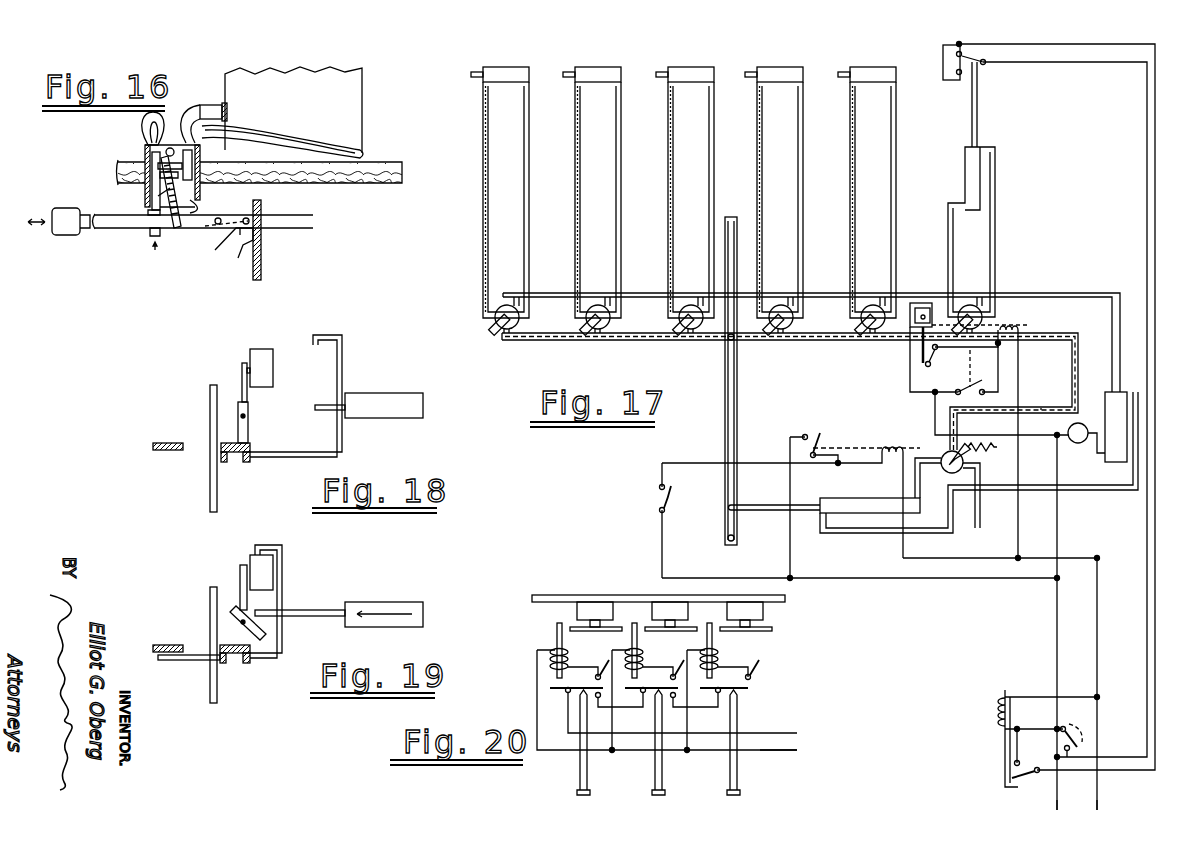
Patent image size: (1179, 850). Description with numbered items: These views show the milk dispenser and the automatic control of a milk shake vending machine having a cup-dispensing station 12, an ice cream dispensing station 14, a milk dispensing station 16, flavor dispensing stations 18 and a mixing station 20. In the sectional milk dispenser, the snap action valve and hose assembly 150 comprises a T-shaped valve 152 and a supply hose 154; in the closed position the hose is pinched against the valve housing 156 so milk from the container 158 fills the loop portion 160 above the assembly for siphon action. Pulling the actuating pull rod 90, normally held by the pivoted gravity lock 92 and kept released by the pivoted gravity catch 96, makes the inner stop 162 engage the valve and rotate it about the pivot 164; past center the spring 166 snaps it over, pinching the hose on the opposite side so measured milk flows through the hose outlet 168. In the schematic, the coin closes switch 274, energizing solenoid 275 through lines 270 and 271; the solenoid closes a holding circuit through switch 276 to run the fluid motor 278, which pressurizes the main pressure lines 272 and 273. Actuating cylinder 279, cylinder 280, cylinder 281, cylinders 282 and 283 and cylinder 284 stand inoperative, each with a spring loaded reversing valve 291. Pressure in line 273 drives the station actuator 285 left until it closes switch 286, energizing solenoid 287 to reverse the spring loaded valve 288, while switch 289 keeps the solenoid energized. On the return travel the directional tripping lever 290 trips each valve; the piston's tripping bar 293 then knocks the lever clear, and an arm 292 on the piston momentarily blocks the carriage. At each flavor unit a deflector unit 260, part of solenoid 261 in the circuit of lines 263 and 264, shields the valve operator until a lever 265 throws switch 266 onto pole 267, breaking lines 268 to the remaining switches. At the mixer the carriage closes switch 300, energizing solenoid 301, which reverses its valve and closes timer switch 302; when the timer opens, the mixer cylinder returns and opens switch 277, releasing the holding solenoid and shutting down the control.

In FIG. 17, the cup-dispensing station 12 is at (492, 175).
In FIG. 17, the ice cream dispensing station 14 is at (584, 175).
In FIG. 17, the milk dispensing station 16 is at (679, 175).
In FIG. 17, the flavor dispensing stations 18 is at (820, 173).
In FIG. 17, the mixing station 20 is at (1014, 114).
In FIG. 16, the actuating pull rod 90 is at (100, 229).
In FIG. 16, the pivoted gravity lock 92 is at (262, 262).
In FIG. 16, the pivoted gravity catch 96 is at (232, 258).
In FIG. 16, the snap action valve and hose assembly 150 is at (141, 155).
In FIG. 16, the T-shaped valve 152 is at (150, 228).
In FIG. 16, the supply hose 154 is at (210, 134).
In FIG. 16, the valve housing 156 is at (148, 133).
In FIG. 16, the container 158 is at (362, 118).
In FIG. 16, the loop portion of the hose 160 is at (222, 103).
In FIG. 16, the inner stop 162 is at (168, 234).
In FIG. 16, the pivot 164 is at (152, 186).
In FIG. 16, the spring 166 is at (168, 148).
In FIG. 16, the hose outlet 168 is at (148, 236).
In FIG. 20, the deflector unit 260 is at (554, 630).
In FIG. 20, the solenoid 261 is at (550, 658).
In FIG. 20, the line 263 is at (797, 733).
In FIG. 20, the line 264 is at (797, 750).
In FIG. 20, the lever 265 is at (580, 782).
In FIG. 20, the switch 266 is at (750, 689).
In FIG. 20, the pole 267 is at (604, 674).
In FIG. 20, the lines 268 is at (628, 707).
In FIG. 17, the line 270 is at (1055, 800).
In FIG. 17, the line 271 is at (1115, 799).
In FIG. 17, the main pressure line 272 is at (831, 345).
In FIG. 17, the main pressure line 273 is at (1042, 408).
In FIG. 17, the switch 274 is at (1085, 735).
In FIG. 17, the solenoid 275 is at (1000, 712).
In FIG. 17, the switch 276 is at (1037, 773).
In FIG. 17, the switch 277 is at (943, 75).
In FIG. 17, the fluid motor 278 is at (1084, 425).
In FIG. 17, the actuating cylinder 279 is at (506, 75).
In FIG. 18, the actuating cylinder 279 is at (394, 393).
In FIG. 19, the actuating cylinder 279 is at (392, 602).
In FIG. 17, the cylinder 280 is at (597, 75).
In FIG. 17, the cylinder 281 is at (690, 75).
In FIG. 17, the cylinder 282 is at (780, 75).
In FIG. 17, the cylinder 283 is at (872, 75).
In FIG. 17, the cylinder 284 is at (965, 175).
In FIG. 17, the station actuator 285 is at (870, 492).
In FIG. 17, the switch 286 is at (668, 505).
In FIG. 17, the solenoid 287 is at (890, 442).
In FIG. 17, the spring loaded valve 288 is at (946, 474).
In FIG. 17, the switch 289 is at (818, 440).
In FIG. 18, the directional tripping lever 290 is at (250, 430).
In FIG. 19, the directional tripping lever 290 is at (232, 618).
In FIG. 17, the spring loaded reversing valve 291 is at (520, 326).
In FIG. 18, the spring loaded reversing valve 291 is at (266, 380).
In FIG. 19, the spring loaded reversing valve 291 is at (252, 560).
In FIG. 20, the spring loaded reversing valve 291 is at (652, 613).
In FIG. 18, the arm 292 is at (286, 458).
In FIG. 19, the arm 292 is at (200, 660).
In FIG. 18, the tripping bar 293 is at (310, 406).
In FIG. 19, the tripping bar 293 is at (262, 620).
In FIG. 17, the switch 300 is at (962, 393).
In FIG. 17, the solenoid 301 is at (1010, 318).
In FIG. 17, the switch 302 is at (910, 350).